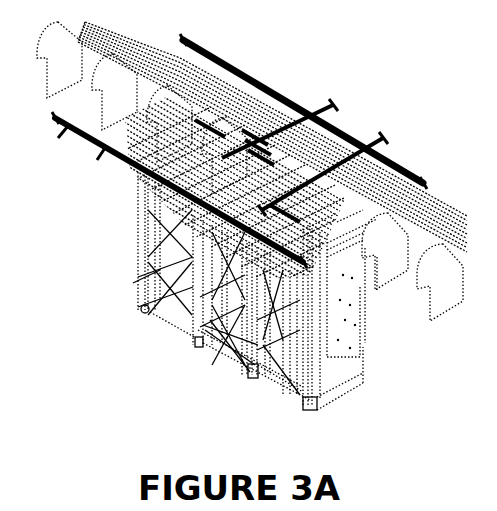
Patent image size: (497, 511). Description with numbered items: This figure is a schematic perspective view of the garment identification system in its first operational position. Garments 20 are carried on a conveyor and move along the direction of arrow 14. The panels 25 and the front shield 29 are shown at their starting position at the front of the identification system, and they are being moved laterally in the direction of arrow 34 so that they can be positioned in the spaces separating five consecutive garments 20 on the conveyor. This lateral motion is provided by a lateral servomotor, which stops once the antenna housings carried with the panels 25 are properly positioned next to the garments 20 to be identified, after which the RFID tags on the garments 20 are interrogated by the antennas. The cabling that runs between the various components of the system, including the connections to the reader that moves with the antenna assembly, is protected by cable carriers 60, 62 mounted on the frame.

The arrow 14 is at (430, 142).
The garments 20 is at (445, 308).
The panels 25 is at (303, 403).
The front shield 29 is at (147, 313).
The arrow 34 is at (360, 418).
The cable carrier 60 is at (268, 108).
The cable carrier 62 is at (137, 177).